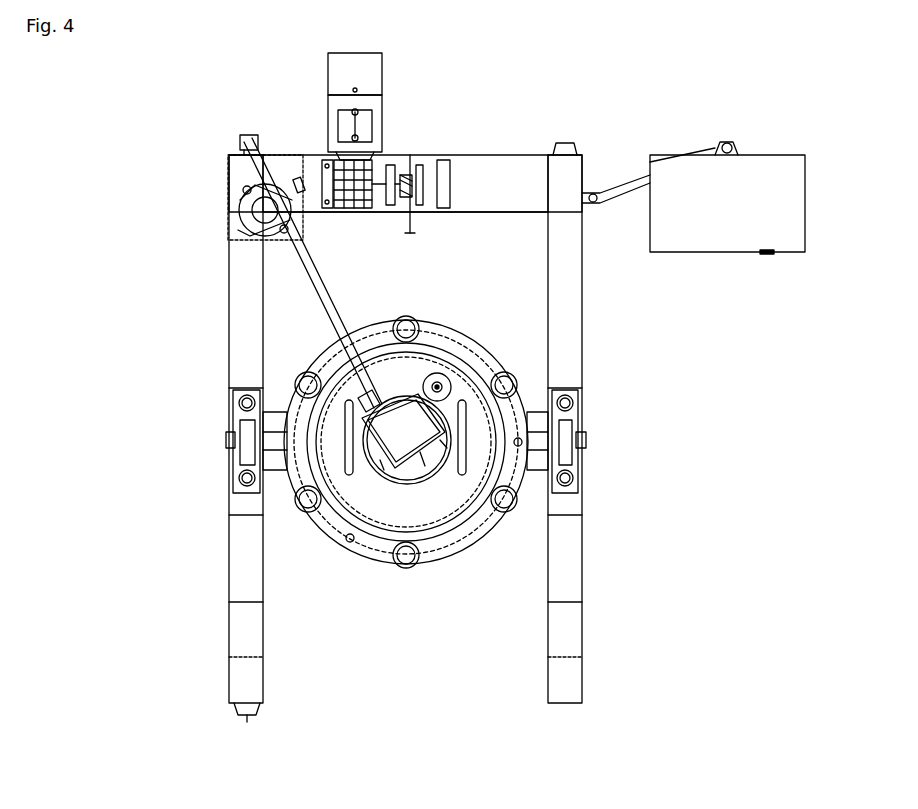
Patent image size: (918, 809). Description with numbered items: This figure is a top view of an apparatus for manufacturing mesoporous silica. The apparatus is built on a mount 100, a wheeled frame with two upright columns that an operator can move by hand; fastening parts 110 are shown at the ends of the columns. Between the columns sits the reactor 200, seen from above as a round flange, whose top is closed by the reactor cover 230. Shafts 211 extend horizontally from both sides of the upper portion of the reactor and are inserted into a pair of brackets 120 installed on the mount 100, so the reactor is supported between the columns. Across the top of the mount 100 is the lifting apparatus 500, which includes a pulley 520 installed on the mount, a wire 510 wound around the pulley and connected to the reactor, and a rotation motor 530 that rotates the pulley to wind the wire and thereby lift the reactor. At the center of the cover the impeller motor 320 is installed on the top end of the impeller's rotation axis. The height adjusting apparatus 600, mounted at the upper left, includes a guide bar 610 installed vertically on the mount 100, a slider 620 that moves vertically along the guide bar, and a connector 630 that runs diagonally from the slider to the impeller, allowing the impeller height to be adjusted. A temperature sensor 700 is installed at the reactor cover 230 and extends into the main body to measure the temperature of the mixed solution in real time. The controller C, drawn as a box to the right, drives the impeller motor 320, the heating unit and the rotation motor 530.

The mount 100 is at (585, 306).
The fastening part 110 is at (565, 142).
The brackets 120 is at (228, 440).
The reactor 200 is at (407, 457).
The shafts 211 is at (276, 472).
The reactor cover 230 is at (440, 502).
The impeller motor 320 is at (410, 392).
The lifting apparatus 500 is at (374, 155).
The wire 510 is at (412, 168).
The pulley 520 is at (418, 210).
The rotation motor 530 is at (385, 125).
The height adjusting apparatus 600 is at (266, 271).
The guide bar 610 is at (250, 205).
The slider 620 is at (240, 145).
The connector 630 is at (300, 270).
The temperature sensor 700 is at (442, 382).
The controller C is at (747, 253).